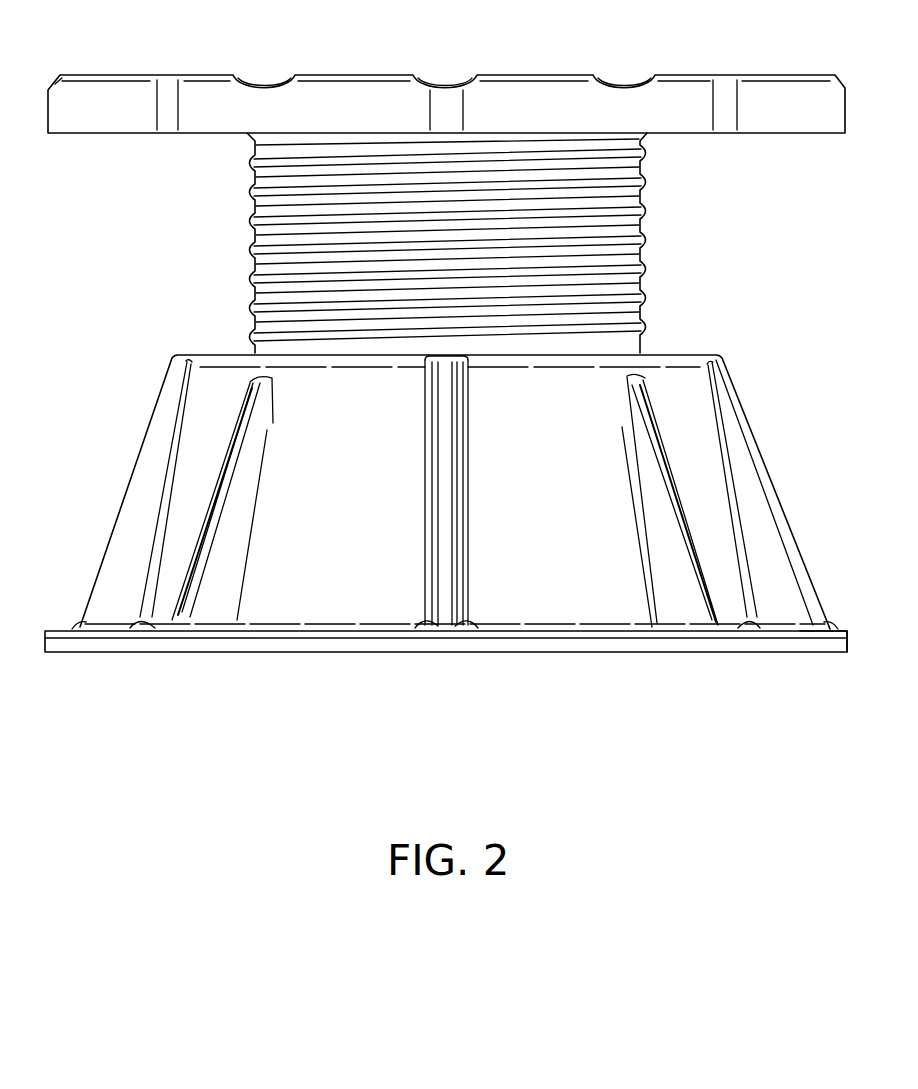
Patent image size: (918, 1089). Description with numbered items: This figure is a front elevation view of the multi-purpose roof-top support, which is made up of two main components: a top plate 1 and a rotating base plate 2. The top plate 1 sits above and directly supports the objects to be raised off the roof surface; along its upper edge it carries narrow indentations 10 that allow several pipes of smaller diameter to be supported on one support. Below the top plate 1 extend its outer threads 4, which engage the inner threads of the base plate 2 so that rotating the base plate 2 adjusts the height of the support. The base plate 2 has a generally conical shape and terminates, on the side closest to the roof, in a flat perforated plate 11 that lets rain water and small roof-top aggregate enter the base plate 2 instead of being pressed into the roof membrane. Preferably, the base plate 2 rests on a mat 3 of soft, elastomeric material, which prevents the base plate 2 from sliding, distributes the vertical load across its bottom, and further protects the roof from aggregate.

The top plate 1 is at (45, 65).
The narrow indentations 10 is at (447, 88).
The outer threads 4 is at (643, 246).
The rotating base plate 2 is at (150, 470).
The mat 3 is at (80, 641).
The flat perforated plate 11 is at (832, 629).